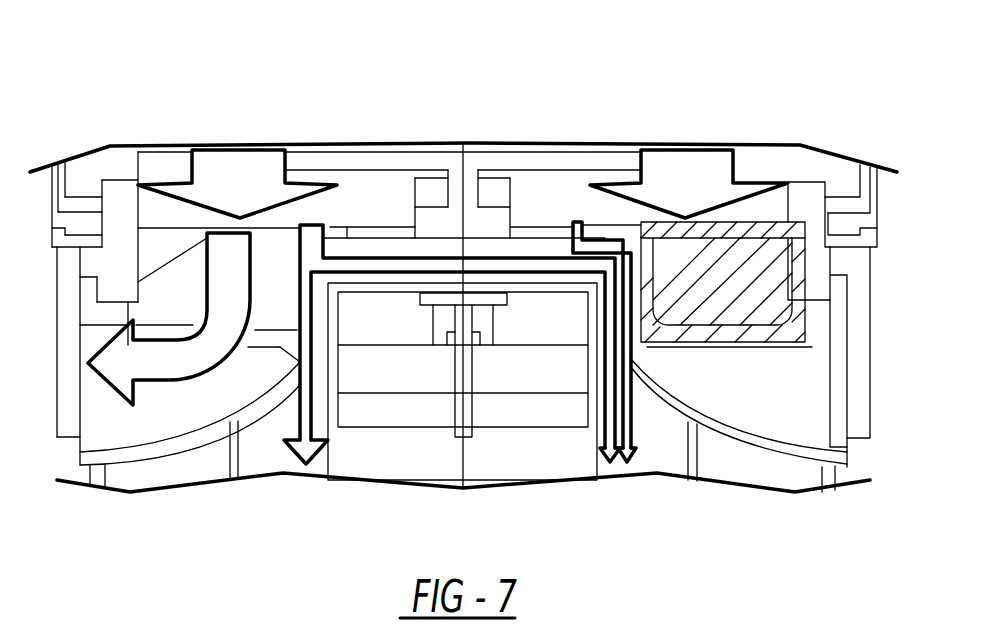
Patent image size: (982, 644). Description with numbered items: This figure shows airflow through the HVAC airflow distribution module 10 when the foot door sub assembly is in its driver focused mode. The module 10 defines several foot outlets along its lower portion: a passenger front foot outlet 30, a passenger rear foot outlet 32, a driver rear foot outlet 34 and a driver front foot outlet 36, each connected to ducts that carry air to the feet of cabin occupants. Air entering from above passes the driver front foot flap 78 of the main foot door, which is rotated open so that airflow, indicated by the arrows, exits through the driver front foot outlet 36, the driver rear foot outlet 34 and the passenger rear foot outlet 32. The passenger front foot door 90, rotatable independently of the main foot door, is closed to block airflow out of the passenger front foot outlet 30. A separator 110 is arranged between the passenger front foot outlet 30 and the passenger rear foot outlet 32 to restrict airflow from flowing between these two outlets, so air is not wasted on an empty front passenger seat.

The HVAC airflow distribution module 10 is at (236, 84).
The driver front foot flap 78 is at (167, 210).
The passenger front foot door 90 is at (800, 263).
The driver front foot outlet 36 is at (97, 398).
The driver rear foot outlet 34 is at (290, 462).
The passenger rear foot outlet 32 is at (643, 458).
The separator 110 is at (633, 318).
The passenger front foot outlet 30 is at (847, 382).